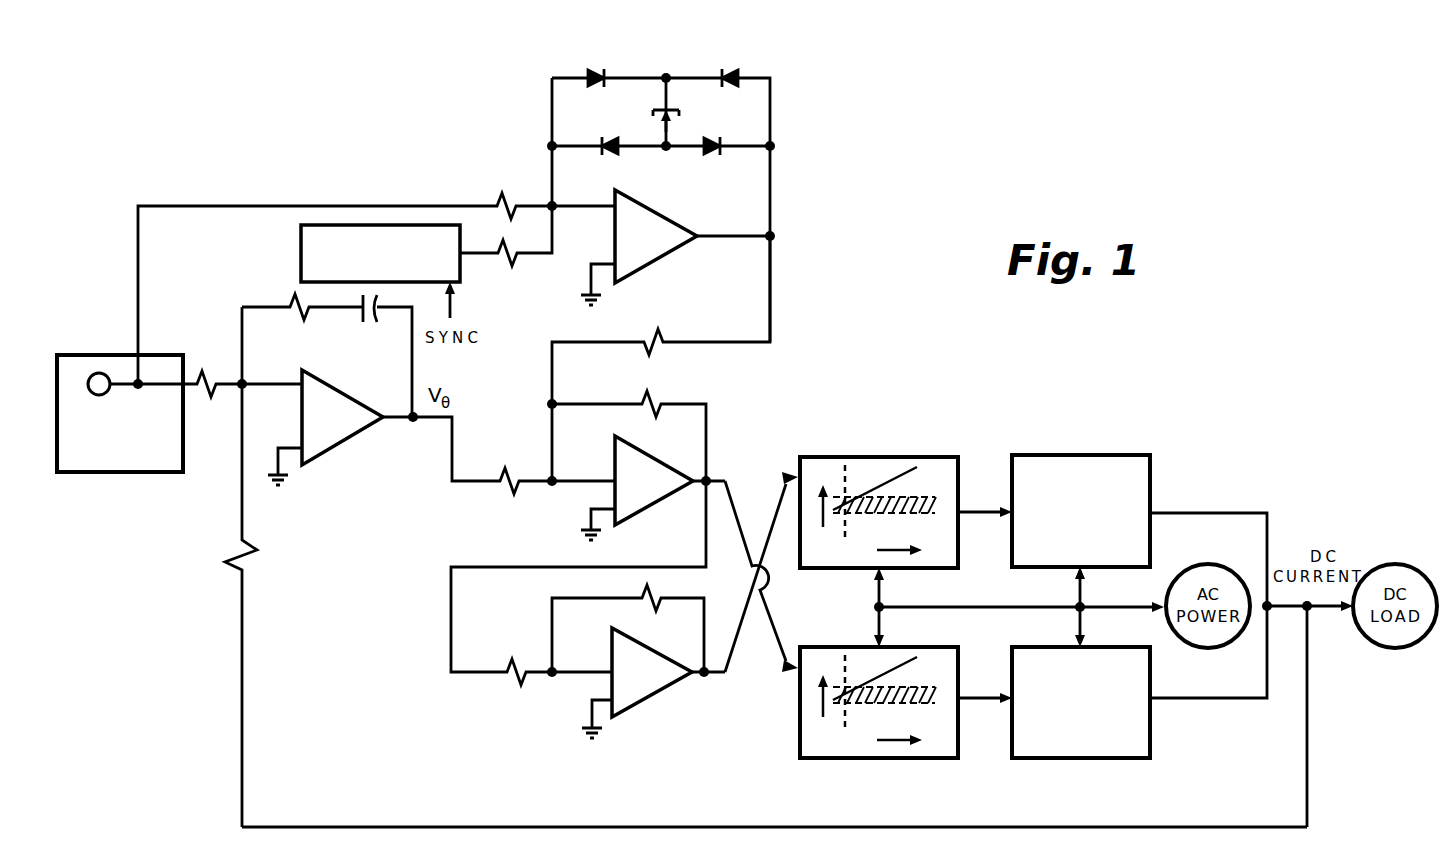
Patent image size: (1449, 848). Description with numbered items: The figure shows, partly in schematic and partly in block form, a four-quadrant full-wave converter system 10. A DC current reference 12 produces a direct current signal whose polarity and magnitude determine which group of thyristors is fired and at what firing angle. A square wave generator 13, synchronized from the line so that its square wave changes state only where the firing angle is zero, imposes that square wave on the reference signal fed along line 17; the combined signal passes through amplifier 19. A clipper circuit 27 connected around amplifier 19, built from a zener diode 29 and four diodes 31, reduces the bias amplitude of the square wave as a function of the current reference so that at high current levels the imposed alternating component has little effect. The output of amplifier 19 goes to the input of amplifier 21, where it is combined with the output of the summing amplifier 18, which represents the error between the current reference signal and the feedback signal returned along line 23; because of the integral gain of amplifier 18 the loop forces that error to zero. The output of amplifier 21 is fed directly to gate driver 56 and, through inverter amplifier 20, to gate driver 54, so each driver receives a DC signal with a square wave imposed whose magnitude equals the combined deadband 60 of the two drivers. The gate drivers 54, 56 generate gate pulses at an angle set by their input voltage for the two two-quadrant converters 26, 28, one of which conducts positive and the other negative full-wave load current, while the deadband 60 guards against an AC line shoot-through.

The four-quadrant full-wave converter system 10 is at (808, 310).
The DC current reference 12 is at (185, 447).
The square wave generator 13 is at (300, 242).
The line 17 is at (250, 206).
The amplifier 18 is at (344, 392).
The amplifier 19 is at (667, 220).
The inverter amplifier 20 is at (655, 700).
The amplifier 21 is at (680, 453).
The line 23 is at (334, 827).
The two-quadrant converter 26 is at (1112, 456).
The clipper circuit 27 is at (786, 128).
The two-quadrant converter 28 is at (1152, 740).
The zener diode 29 is at (680, 112).
The diodes 31 is at (609, 78).
The gate driver 54 is at (960, 462).
The gate driver 56 is at (834, 647).
The deadband 60 is at (935, 498).